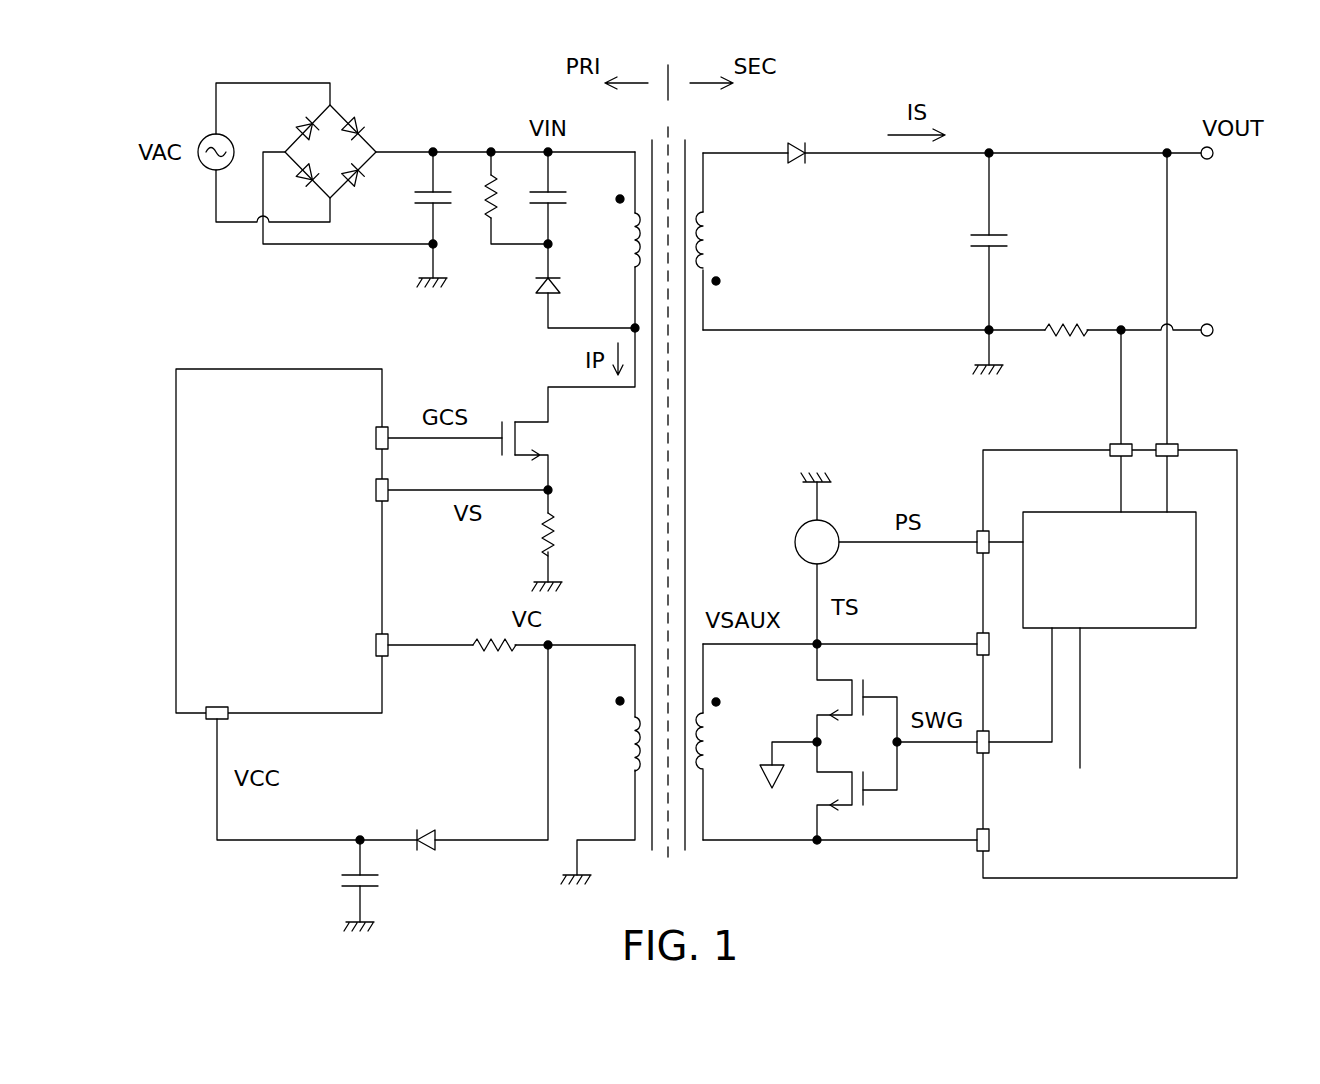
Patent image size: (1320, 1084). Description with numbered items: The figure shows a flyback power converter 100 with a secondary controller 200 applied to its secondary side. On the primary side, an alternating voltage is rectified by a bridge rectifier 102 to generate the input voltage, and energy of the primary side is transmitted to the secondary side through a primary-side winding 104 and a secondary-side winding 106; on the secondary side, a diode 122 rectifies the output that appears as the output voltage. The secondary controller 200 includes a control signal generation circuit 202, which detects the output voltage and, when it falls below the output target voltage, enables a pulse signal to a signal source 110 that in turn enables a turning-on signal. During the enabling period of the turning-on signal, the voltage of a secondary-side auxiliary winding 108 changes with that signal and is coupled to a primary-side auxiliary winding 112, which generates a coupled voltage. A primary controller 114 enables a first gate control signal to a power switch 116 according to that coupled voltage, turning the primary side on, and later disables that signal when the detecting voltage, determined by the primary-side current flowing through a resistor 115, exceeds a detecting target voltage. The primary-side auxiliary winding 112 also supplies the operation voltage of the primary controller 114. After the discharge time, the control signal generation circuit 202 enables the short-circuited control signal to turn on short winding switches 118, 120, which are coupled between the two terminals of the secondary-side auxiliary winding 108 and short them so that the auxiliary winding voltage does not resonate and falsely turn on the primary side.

The power converter 100 is at (1162, 79).
The bridge rectifier 102 is at (343, 116).
The primary-side winding 104 is at (630, 250).
The secondary-side winding 106 is at (712, 238).
The secondary-side auxiliary winding 108 is at (709, 746).
The signal source 110 is at (802, 528).
The primary-side auxiliary winding 112 is at (628, 745).
The primary controller 114 is at (220, 369).
The resistor 115 is at (555, 530).
The power switch 116 is at (530, 422).
The short winding switch 118 is at (836, 680).
The short winding switch 120 is at (840, 807).
The diode 122 is at (797, 164).
The secondary controller 200 is at (1118, 639).
The control signal generation circuit 202 is at (1163, 630).